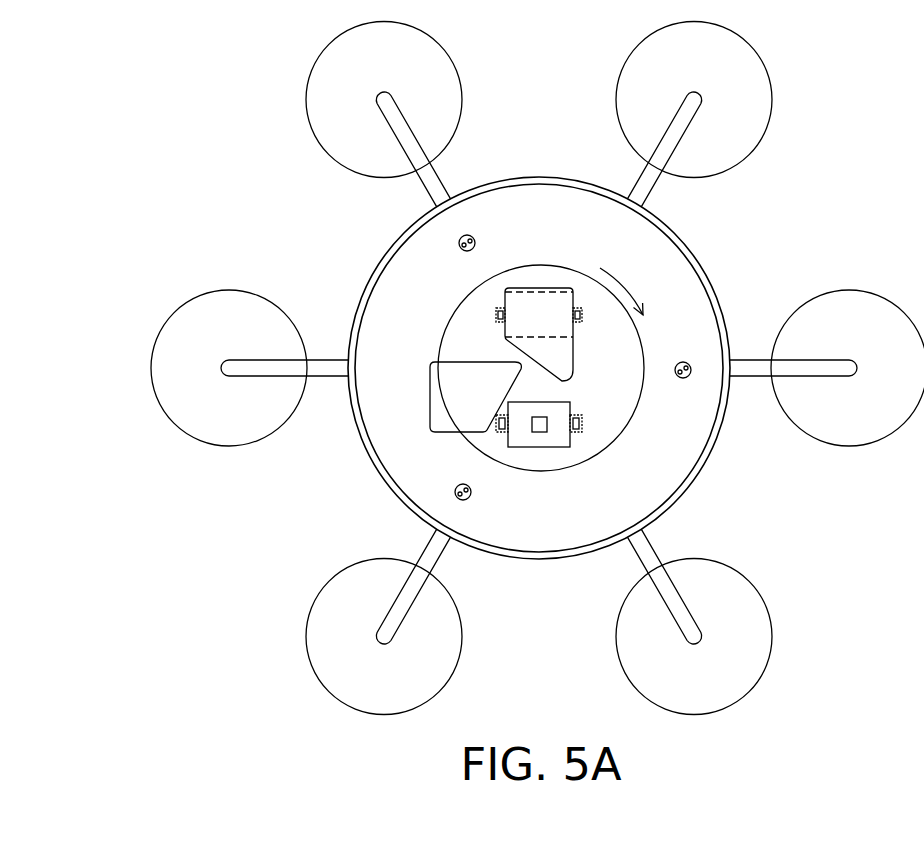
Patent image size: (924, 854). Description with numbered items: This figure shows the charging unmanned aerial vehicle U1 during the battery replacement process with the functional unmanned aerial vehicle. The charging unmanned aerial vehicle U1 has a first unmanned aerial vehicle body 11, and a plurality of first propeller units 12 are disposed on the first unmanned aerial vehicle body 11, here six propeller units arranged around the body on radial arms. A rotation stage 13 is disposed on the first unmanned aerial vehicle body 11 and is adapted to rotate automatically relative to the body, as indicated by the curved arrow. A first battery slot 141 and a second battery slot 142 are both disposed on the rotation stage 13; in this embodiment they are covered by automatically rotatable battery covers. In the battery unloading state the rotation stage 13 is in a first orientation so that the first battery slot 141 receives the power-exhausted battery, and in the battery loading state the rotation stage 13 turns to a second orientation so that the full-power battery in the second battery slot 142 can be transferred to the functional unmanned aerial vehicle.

The charging unmanned aerial vehicle U1 is at (88, 52).
The first unmanned aerial vehicle body 11 is at (698, 263).
The first propeller units 12 is at (762, 100).
The rotation stage 13 is at (607, 410).
The first battery slot 141 is at (540, 438).
The second battery slot 142 is at (540, 300).